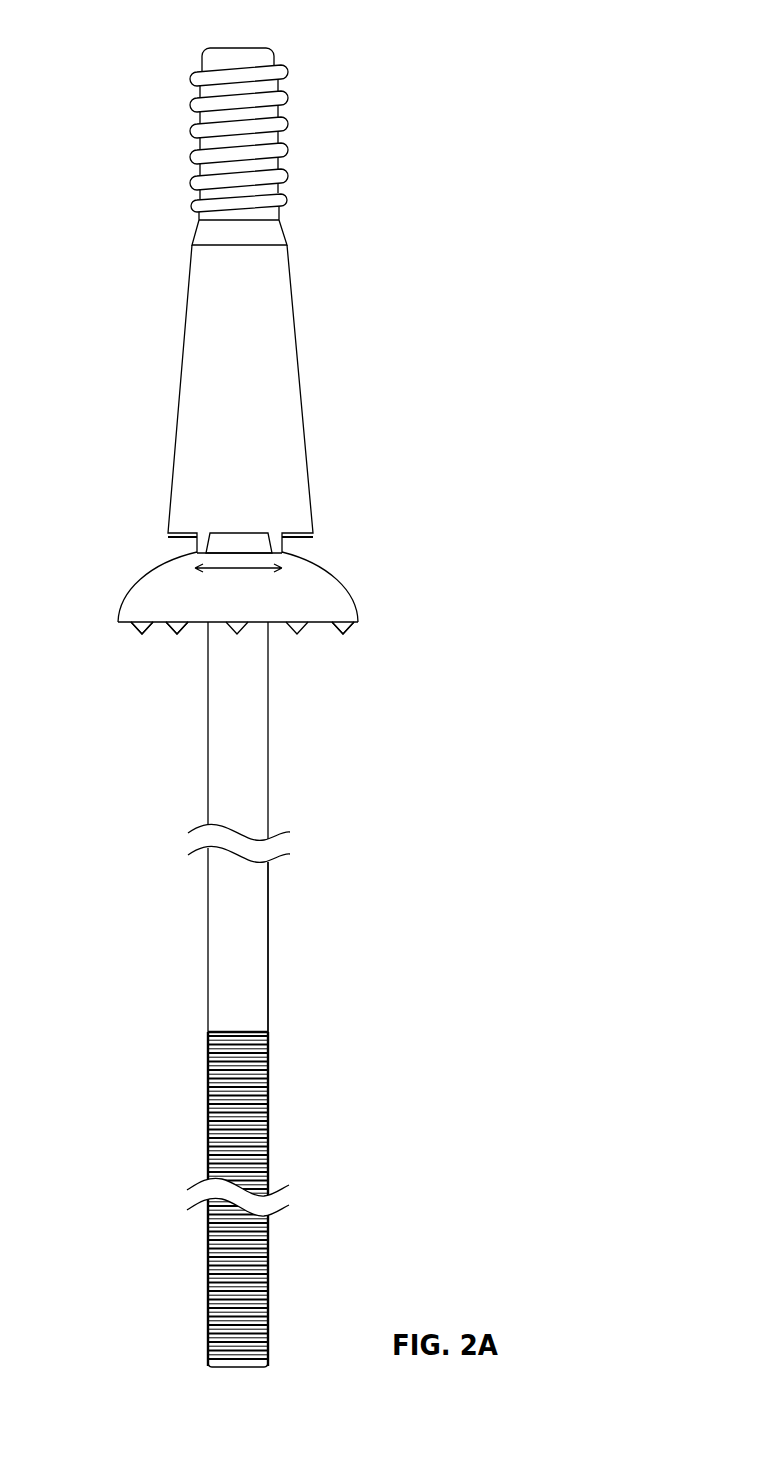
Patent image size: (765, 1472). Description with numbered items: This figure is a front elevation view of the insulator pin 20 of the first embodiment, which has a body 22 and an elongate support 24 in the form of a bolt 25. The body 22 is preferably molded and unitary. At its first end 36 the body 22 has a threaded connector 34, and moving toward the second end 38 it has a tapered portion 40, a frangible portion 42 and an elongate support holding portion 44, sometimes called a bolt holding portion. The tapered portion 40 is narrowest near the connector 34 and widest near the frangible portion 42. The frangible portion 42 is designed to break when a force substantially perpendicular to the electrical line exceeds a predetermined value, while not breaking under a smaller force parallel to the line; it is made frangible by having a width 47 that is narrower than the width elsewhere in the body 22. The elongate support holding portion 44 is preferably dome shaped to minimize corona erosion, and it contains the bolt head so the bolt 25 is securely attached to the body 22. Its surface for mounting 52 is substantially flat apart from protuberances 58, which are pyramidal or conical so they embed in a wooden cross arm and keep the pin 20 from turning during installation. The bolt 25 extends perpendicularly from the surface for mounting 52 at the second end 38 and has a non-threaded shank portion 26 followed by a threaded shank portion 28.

The insulator pin 20 is at (440, 171).
The body 22 is at (401, 307).
The elongate support 24 is at (326, 780).
The bolt 25 is at (268, 902).
The non-threaded shank portion 26 is at (208, 772).
The threaded shank portion 28 is at (265, 1118).
The connector 34 is at (288, 143).
The first end 36 is at (258, 46).
The second end 38 is at (278, 628).
The tapered portion 40 is at (290, 344).
The frangible portion 42 is at (284, 545).
The elongate support holding portion 44 is at (348, 596).
The width 47 is at (238, 584).
The surface for mounting 52 is at (200, 630).
The protuberances 58 is at (142, 630).